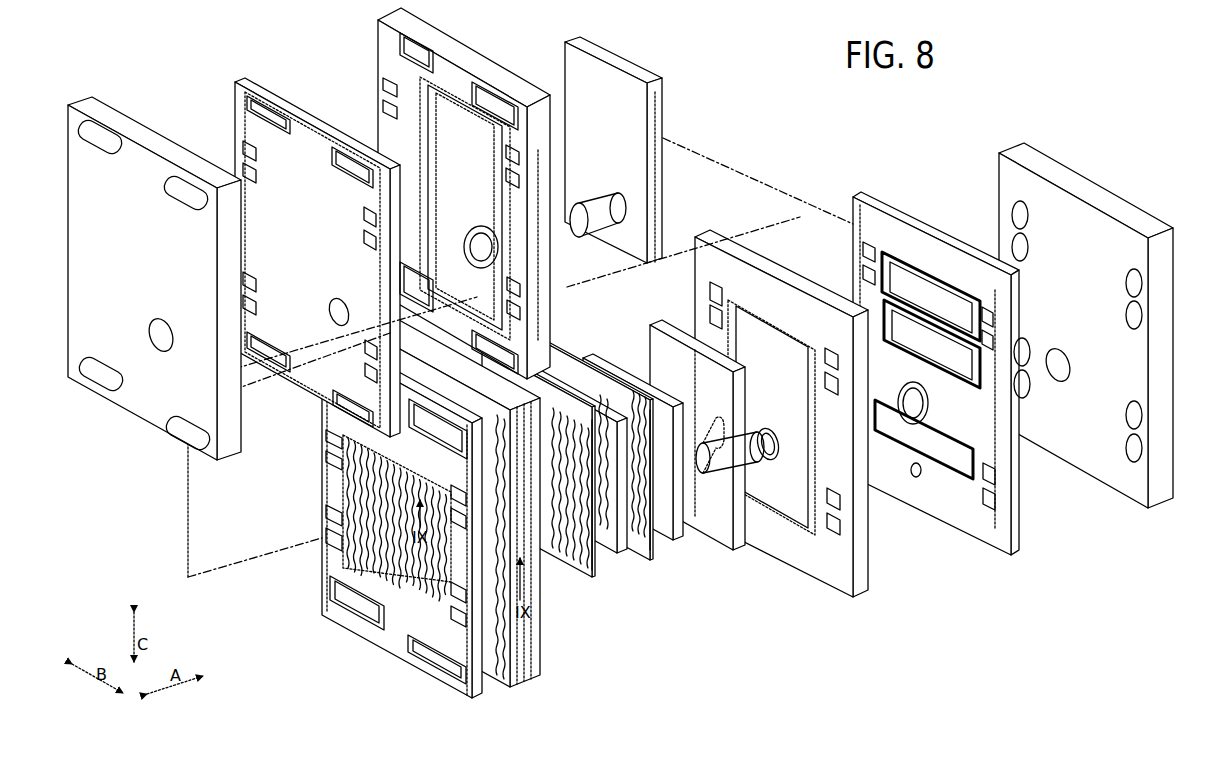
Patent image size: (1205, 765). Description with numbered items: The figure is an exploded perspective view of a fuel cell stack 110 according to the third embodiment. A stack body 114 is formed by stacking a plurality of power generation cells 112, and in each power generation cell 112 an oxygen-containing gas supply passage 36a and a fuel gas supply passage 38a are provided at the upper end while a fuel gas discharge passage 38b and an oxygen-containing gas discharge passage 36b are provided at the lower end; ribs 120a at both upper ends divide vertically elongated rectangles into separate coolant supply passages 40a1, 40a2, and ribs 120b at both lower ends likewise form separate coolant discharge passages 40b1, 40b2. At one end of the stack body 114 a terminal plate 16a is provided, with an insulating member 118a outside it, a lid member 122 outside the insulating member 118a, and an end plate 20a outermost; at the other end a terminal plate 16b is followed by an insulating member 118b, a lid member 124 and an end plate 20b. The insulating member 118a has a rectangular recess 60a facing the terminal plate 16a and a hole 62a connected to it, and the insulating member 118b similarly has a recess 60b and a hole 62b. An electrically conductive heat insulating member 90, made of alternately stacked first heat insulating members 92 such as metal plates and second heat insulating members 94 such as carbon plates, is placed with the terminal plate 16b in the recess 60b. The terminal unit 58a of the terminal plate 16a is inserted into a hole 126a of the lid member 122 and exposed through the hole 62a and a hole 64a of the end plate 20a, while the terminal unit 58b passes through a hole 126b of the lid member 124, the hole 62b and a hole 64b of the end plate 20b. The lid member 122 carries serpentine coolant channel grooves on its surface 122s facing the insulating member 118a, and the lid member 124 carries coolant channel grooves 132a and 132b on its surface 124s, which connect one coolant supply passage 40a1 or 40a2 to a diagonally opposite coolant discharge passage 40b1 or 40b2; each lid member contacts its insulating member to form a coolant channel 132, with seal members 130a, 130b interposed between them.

The fuel cell stack 110 is at (1012, 86).
The end plate 20a is at (82, 100).
The end plate 20b is at (1055, 150).
The lid member 122 is at (240, 80).
The surface of the lid member 122s is at (244, 390).
The lid member 124 is at (860, 195).
The surface of the lid member 124s is at (975, 525).
The insulating member 118a is at (420, 24).
The insulating member 118b is at (700, 232).
The terminal plate 16a is at (600, 50).
The terminal plate 16b is at (733, 555).
The terminal unit 58a is at (622, 203).
The terminal unit 58b is at (708, 475).
The recess 60a is at (465, 95).
The recess 60b is at (750, 330).
The hole 62a is at (466, 240).
The hole 62b is at (778, 446).
The hole 64a is at (150, 336).
The hole 64b is at (1070, 365).
The oxygen-containing gas supply passage 36a is at (190, 197).
The oxygen-containing gas discharge passage 36b is at (105, 395).
The fuel gas supply passage 38a is at (117, 143).
The fuel gas discharge passage 38b is at (182, 440).
The coolant supply passage 40a1 is at (243, 142).
The coolant supply passage 40a2 is at (243, 170).
The coolant discharge passage 40b1 is at (250, 273).
The coolant discharge passage 40b2 is at (243, 305).
The rib 120a is at (257, 176).
The rib 120b is at (243, 286).
The hole 126a is at (330, 305).
The hole 126b is at (912, 480).
The seal member 130a is at (653, 170).
The seal member 130b is at (540, 250).
The coolant channel 132 is at (927, 304).
The coolant channel grooves 132a is at (910, 287).
The coolant channel grooves 132b is at (915, 330).
The heat insulating member 90 is at (668, 590).
The first heat insulating members 92 is at (593, 580).
The second heat insulating members 94 is at (615, 555).
The power generation cell 112 is at (536, 680).
The stack body 114 is at (492, 509).